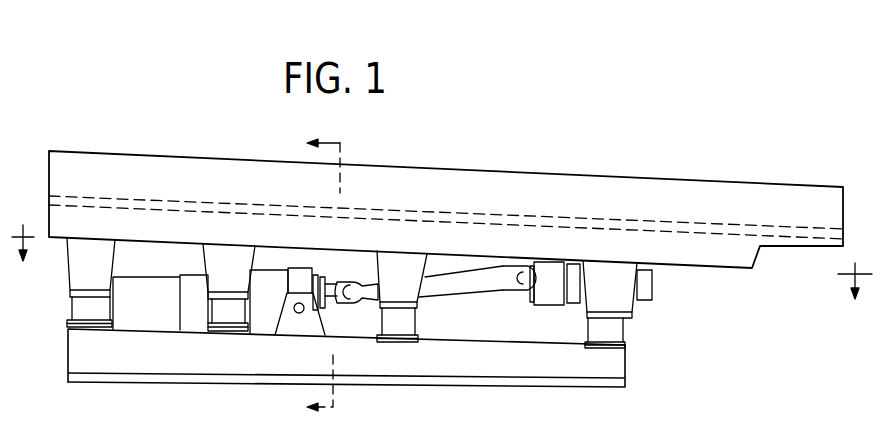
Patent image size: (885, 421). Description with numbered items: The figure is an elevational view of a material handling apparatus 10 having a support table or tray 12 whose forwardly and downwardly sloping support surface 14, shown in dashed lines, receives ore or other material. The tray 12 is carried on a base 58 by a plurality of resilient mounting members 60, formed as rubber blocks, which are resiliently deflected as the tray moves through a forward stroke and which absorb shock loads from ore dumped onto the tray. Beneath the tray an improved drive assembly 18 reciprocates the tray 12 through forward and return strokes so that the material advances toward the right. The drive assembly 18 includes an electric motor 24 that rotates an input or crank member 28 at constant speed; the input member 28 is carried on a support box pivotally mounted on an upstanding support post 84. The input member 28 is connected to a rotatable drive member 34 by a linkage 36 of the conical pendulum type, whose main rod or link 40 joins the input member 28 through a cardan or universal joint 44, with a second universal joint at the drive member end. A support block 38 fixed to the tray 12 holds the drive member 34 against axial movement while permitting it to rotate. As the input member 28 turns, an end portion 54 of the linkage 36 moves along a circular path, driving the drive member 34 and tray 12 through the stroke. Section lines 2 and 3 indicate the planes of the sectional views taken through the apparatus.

The material handling apparatus 10 is at (425, 178).
The support tray 12 is at (679, 177).
The support surface 14 is at (189, 202).
The drive assembly 18 is at (82, 338).
The electric motor 24 is at (133, 315).
The input member 28 is at (331, 273).
The drive member 34 is at (515, 270).
The linkage 36 is at (483, 301).
The support block 38 is at (636, 308).
The main rod or link 40 is at (443, 285).
The universal joint 44 is at (353, 298).
The end portion of the linkage 54 is at (340, 298).
The base 58 is at (532, 368).
The resilient mounting members 60 is at (83, 303).
The support post 84 is at (285, 327).
The section line 2- 2 is at (442, 248).
The section line 3- 3 is at (314, 273).